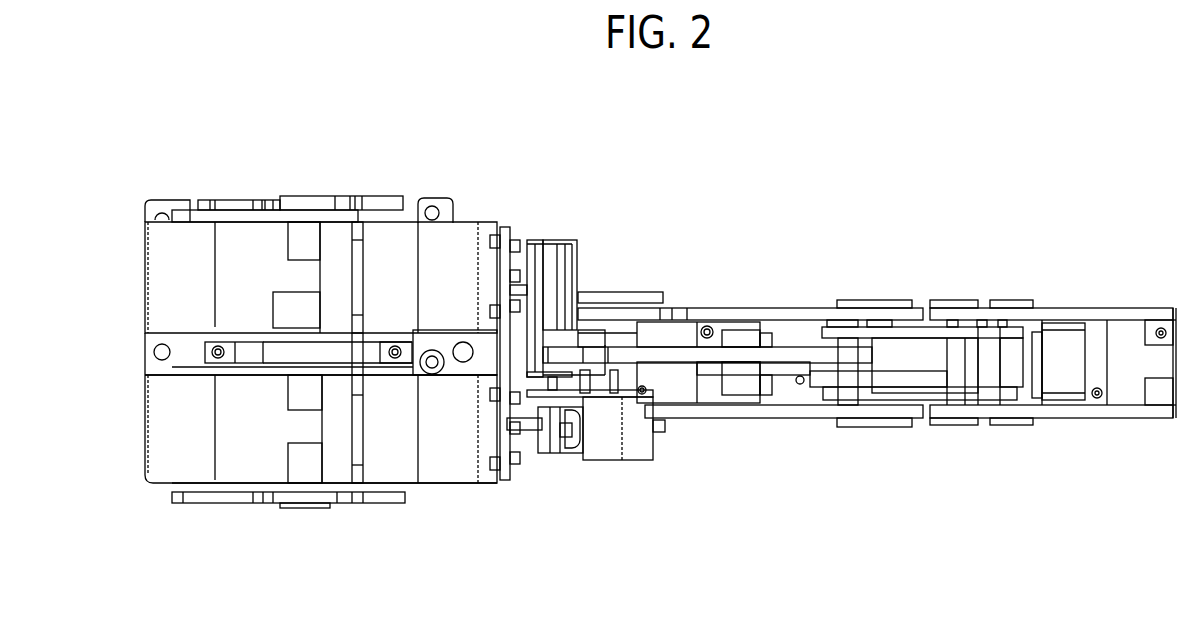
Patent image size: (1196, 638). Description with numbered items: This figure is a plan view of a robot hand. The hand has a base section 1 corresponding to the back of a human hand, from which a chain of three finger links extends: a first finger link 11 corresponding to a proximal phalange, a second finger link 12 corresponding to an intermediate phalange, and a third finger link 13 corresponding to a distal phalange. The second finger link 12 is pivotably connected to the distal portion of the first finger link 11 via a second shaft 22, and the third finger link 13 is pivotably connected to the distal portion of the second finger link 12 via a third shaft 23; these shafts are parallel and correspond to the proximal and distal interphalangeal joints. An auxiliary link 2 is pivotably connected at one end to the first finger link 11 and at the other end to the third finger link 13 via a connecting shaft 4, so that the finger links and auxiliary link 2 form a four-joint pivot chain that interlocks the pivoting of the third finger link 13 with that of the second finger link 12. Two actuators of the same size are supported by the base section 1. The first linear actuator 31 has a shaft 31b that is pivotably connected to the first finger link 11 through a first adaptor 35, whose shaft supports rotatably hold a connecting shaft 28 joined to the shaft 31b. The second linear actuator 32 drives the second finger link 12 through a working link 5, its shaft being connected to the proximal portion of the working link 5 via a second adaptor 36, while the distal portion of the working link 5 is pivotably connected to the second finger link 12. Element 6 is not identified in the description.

The base section 1 is at (378, 505).
The auxiliary link 2 is at (905, 350).
The connecting shaft 4 is at (952, 300).
The working link 5 is at (738, 345).
The joint shaft 6 is at (841, 360).
The first finger link 11 is at (790, 418).
The second finger link 12 is at (921, 380).
The third finger link 13 is at (1050, 418).
The second shaft 22 is at (878, 428).
The third shaft 23 is at (1017, 425).
The connecting shaft 28 is at (550, 438).
The first linear actuator 31 is at (238, 465).
The shaft 31b is at (525, 436).
The second linear actuator 32 is at (238, 243).
The first adaptor 35 is at (602, 448).
The second adaptor 36 is at (572, 273).